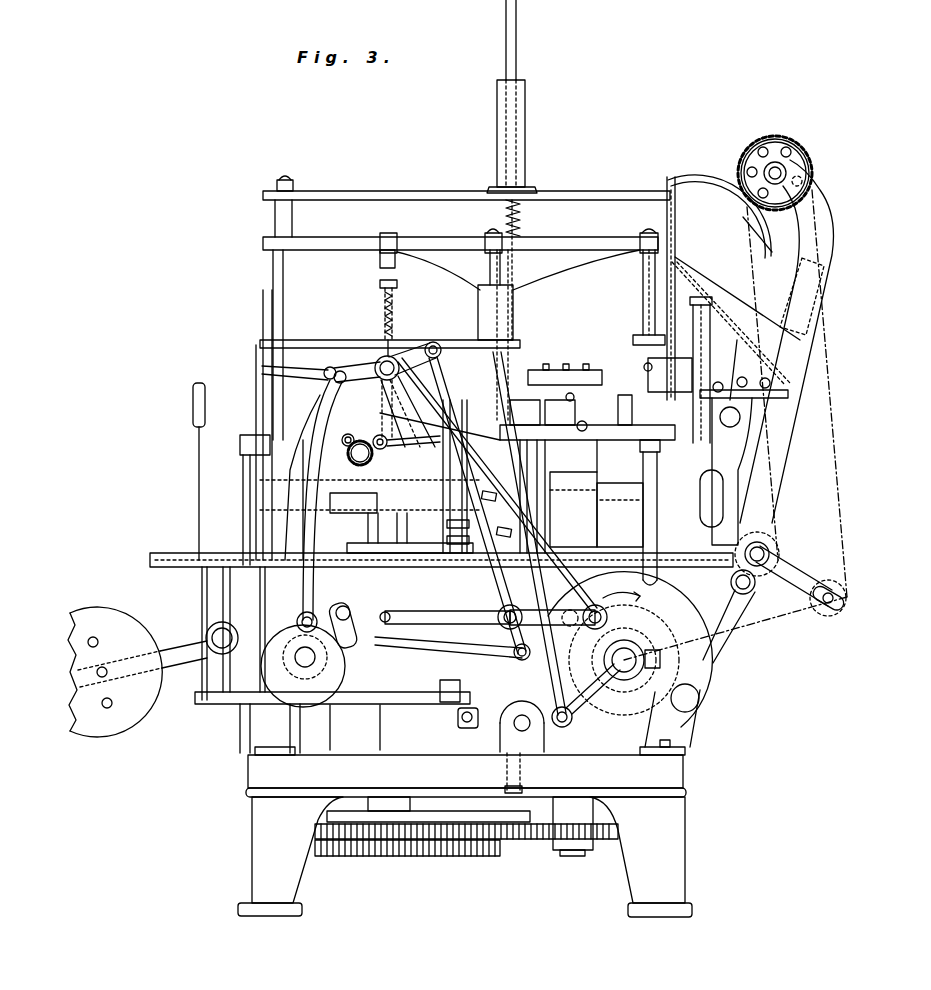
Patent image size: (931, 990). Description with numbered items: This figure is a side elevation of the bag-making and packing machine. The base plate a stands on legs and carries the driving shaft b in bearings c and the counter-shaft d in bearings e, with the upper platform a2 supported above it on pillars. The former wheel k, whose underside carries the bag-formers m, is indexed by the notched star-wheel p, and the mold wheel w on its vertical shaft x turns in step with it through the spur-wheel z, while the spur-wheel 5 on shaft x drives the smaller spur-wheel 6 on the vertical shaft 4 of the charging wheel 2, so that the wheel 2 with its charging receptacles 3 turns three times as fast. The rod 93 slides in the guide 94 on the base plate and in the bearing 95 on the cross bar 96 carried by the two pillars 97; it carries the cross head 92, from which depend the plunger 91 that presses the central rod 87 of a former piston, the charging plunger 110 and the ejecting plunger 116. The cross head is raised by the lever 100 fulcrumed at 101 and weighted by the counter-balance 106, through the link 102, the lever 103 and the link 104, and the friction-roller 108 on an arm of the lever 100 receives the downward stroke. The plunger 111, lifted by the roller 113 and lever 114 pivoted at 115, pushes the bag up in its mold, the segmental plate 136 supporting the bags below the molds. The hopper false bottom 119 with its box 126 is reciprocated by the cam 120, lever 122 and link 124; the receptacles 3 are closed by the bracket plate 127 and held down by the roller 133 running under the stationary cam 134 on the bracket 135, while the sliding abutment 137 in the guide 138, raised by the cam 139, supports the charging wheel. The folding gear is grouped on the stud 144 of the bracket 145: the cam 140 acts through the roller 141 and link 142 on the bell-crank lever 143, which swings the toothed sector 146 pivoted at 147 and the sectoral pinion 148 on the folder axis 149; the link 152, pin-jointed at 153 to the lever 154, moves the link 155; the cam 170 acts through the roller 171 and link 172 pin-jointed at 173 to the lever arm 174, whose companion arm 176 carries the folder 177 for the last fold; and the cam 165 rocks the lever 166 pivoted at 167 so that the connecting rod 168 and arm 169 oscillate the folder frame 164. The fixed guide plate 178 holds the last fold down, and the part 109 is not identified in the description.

The rod 93 is at (518, 22).
The bearing 95 is at (526, 132).
The cross bar 96 is at (380, 195).
The pillars 97 is at (282, 210).
The cross head 92 is at (522, 226).
The plunger 110 is at (478, 305).
The plunger 91 is at (396, 262).
The central rod 87 is at (398, 283).
The screw 109 is at (386, 305).
The lever arm 174 is at (392, 345).
The former wheel k is at (305, 340).
The vertical plunger 116 is at (284, 280).
The bag-former m is at (378, 360).
The pin joint 173 is at (433, 342).
The stud 144 is at (385, 357).
The bell-crank lever 143 is at (332, 367).
The pin joint 153 is at (328, 367).
The lever 154 is at (322, 378).
The arm 169 is at (400, 372).
The connecting rod 168 is at (463, 455).
The lever arm 176 is at (424, 385).
The folder 177 is at (430, 430).
The lever 166 is at (590, 690).
The frame 164 is at (350, 412).
The link 142 is at (314, 578).
The toothed sector 146 is at (364, 463).
The pivot 147 is at (347, 446).
The sectoral pinion 148 is at (380, 450).
The axis 149 is at (416, 449).
The bracket 145 is at (430, 430).
The link 155 is at (262, 396).
The fixed guide plate 178 is at (246, 435).
The mold wheel w is at (353, 503).
The link 152 is at (300, 525).
The vertical plunger 111 is at (370, 522).
The segmental plate 136 is at (468, 529).
The bearing or guide 94 is at (488, 580).
The platform a2 is at (438, 567).
The chamber or box 126 is at (670, 375).
The stationary cam 134 is at (562, 370).
The supporting bracket 135 is at (590, 370).
The bracket plate 127 is at (575, 428).
The charging receptacle 3 is at (594, 410).
The charging wheel 2 is at (613, 441).
The friction-roller 133 is at (640, 436).
The sliding abutment 137 is at (646, 475).
The guide 138 is at (645, 518).
The link 172 is at (545, 528).
The false bottom 119 is at (712, 360).
The link 124 is at (758, 380).
The cam 120 is at (775, 173).
The lever 122 is at (770, 527).
The counter-shaft d is at (660, 668).
The vertical shaft 4 is at (578, 578).
The friction-roller 108 is at (604, 590).
The cam 170 is at (655, 645).
The cam 165 is at (661, 660).
The friction-roller 113 is at (640, 630).
The cam 139 is at (672, 600).
The friction-roller 171 is at (600, 615).
The lever 114 is at (498, 612).
The link 104 is at (530, 635).
The pivot 115 is at (500, 625).
The lever 103 is at (412, 641).
The lever 100 is at (435, 710).
The fulcrum 101 is at (527, 735).
The bearing e is at (652, 722).
The pivot 167 is at (699, 699).
The counter-balance weight 106 is at (137, 672).
The driving shaft b is at (296, 657).
The friction roller 141 is at (300, 617).
The link 102 is at (353, 622).
The bearing c is at (318, 718).
The vertical shaft x is at (380, 712).
The base plate a is at (466, 776).
The cam 140 is at (286, 752).
The star-wheel p is at (456, 814).
The spur-wheel 5 is at (376, 825).
The spur-wheel 6 is at (585, 838).
The spur-wheel z is at (352, 856).